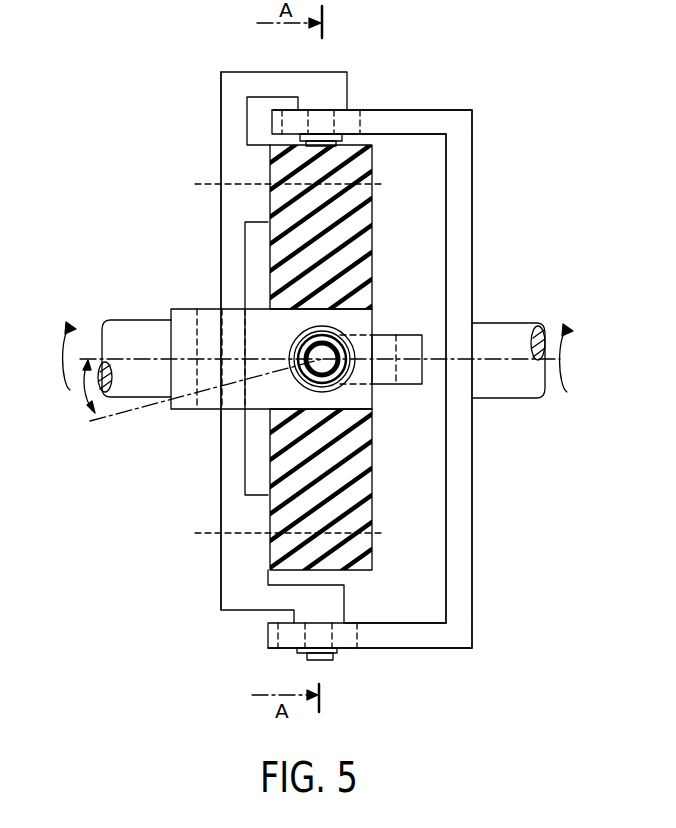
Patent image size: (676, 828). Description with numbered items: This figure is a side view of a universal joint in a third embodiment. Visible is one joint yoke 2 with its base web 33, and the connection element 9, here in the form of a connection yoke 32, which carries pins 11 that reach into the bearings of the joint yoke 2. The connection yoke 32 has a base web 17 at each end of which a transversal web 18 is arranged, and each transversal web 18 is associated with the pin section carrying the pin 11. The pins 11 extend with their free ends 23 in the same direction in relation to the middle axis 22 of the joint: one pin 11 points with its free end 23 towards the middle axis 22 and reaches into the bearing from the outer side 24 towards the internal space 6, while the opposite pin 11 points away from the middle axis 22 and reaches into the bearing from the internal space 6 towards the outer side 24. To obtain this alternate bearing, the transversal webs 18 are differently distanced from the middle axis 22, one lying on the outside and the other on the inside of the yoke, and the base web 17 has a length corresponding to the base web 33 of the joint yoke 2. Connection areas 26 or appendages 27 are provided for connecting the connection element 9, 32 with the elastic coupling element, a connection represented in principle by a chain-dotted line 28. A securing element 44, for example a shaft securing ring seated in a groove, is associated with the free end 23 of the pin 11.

The joint yoke 2 is at (462, 189).
The internal space 6 is at (428, 612).
The connection element 9 is at (189, 341).
The connection yoke 32 is at (223, 253).
The pin 11 is at (335, 121).
The base web 17 is at (232, 475).
The transversal web 18 is at (262, 83).
The middle axis of the joint 22 is at (482, 358).
The free end 23 is at (323, 660).
The outer side 24 is at (397, 110).
The connection area 26 is at (267, 599).
The appendage 27 is at (253, 545).
The chain-dotted line 28 is at (208, 535).
The base web of the joint yoke 33 is at (465, 475).
The securing element 44 is at (297, 652).